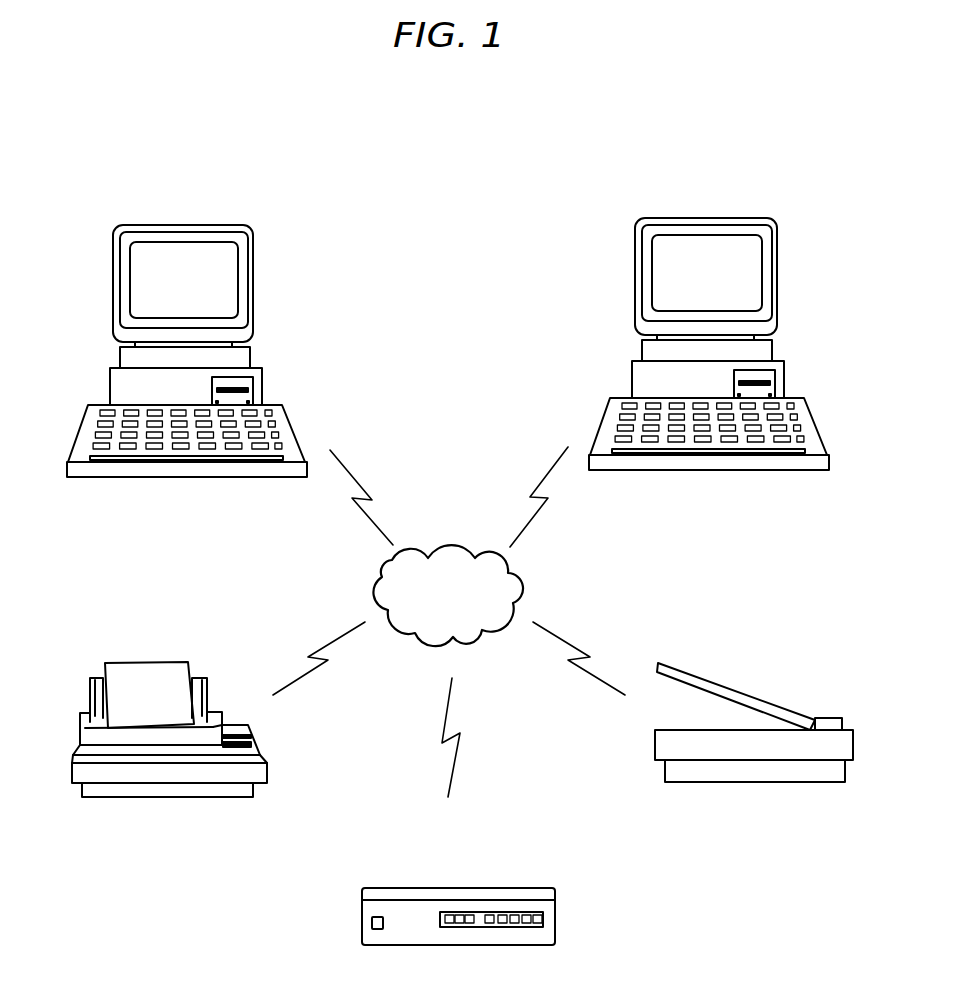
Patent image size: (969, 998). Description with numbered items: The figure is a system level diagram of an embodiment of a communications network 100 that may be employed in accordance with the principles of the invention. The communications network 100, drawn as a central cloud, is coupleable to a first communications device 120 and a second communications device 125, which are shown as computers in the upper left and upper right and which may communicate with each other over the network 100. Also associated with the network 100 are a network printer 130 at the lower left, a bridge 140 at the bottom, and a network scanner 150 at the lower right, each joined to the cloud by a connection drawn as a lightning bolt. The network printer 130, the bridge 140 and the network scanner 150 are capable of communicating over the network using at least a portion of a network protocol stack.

The communications network 100 is at (558, 138).
The first communications device 120 is at (113, 270).
The second communications device 125 is at (635, 270).
The network printer 130 is at (140, 662).
The bridge 140 is at (447, 888).
The network scanner 150 is at (753, 700).